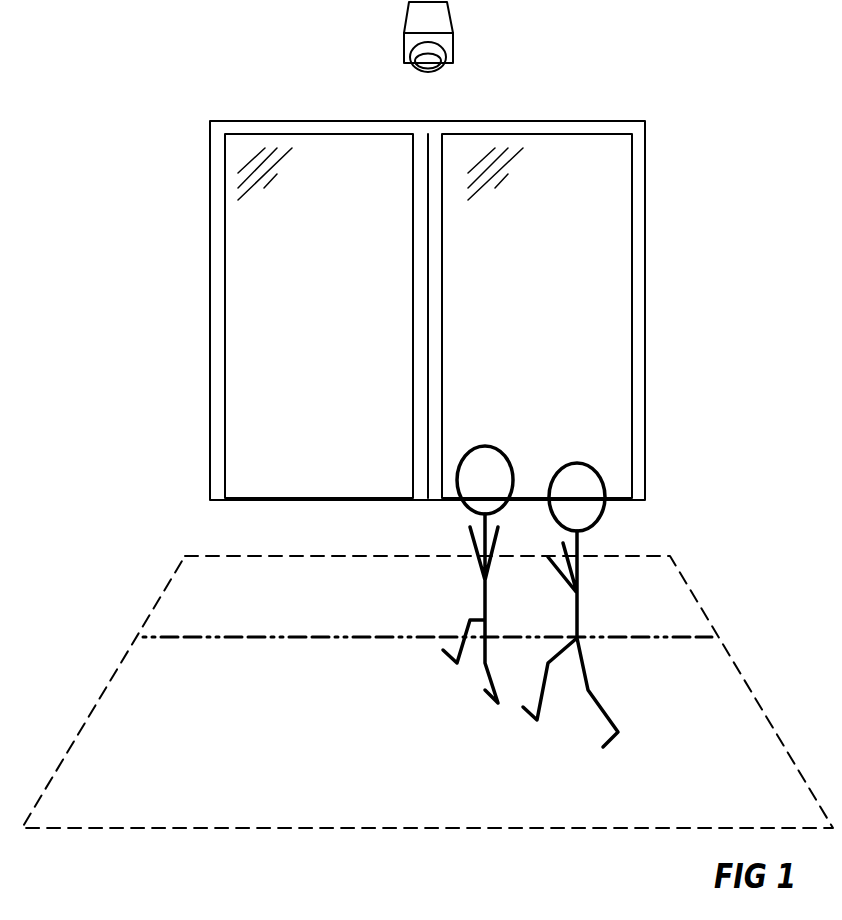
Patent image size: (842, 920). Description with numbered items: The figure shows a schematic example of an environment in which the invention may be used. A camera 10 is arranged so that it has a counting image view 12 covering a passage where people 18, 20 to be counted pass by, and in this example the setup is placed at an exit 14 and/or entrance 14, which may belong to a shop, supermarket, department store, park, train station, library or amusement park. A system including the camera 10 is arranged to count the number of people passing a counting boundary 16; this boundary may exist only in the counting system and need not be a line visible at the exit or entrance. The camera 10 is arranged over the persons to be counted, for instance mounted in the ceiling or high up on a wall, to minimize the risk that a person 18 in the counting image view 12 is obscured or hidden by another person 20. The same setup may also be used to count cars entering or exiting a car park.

The camera 10 is at (410, 32).
The counting image view 12 is at (170, 598).
The exit and/or entrance 14 is at (237, 263).
The counting boundary 16 is at (700, 636).
The person 18 is at (478, 463).
The person 20 is at (573, 488).